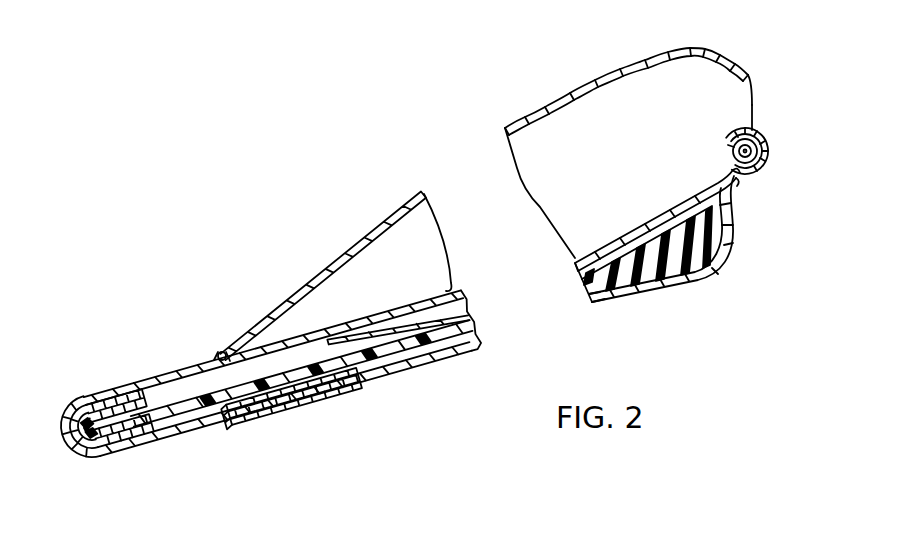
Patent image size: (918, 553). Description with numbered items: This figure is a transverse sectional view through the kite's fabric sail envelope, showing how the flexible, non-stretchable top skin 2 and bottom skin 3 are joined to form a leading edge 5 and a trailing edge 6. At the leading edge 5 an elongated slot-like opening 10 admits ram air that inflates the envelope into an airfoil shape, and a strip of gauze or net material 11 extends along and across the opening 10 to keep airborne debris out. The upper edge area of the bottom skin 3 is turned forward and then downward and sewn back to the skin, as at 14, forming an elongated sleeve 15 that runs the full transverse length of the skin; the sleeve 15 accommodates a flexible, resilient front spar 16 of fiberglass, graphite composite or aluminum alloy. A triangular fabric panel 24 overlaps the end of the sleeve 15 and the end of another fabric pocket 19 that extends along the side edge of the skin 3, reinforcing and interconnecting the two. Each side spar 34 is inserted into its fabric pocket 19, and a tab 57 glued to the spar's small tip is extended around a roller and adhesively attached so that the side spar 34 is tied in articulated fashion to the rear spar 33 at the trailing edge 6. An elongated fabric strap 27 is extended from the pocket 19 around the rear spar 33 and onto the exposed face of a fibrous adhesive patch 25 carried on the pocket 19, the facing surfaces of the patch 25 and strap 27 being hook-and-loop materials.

The top skin 2 is at (367, 242).
The bottom skin 3 is at (446, 291).
The leading edge 5 is at (720, 54).
The trailing edge 6 is at (221, 352).
The slot-like opening 10 is at (752, 110).
The strip of gauze or net material 11 is at (755, 90).
The sewn connection 14 is at (717, 173).
The sleeve 15 is at (747, 180).
The front spar 16 is at (757, 149).
The fabric pocket 19 is at (622, 291).
The triangular fabric panel 24 is at (724, 224).
The fibrous adhesive patch 25 is at (277, 401).
The fabric strap 27 is at (108, 392).
The rear spar 33 is at (75, 454).
The side spar 34 is at (407, 340).
The tab 57 is at (95, 459).